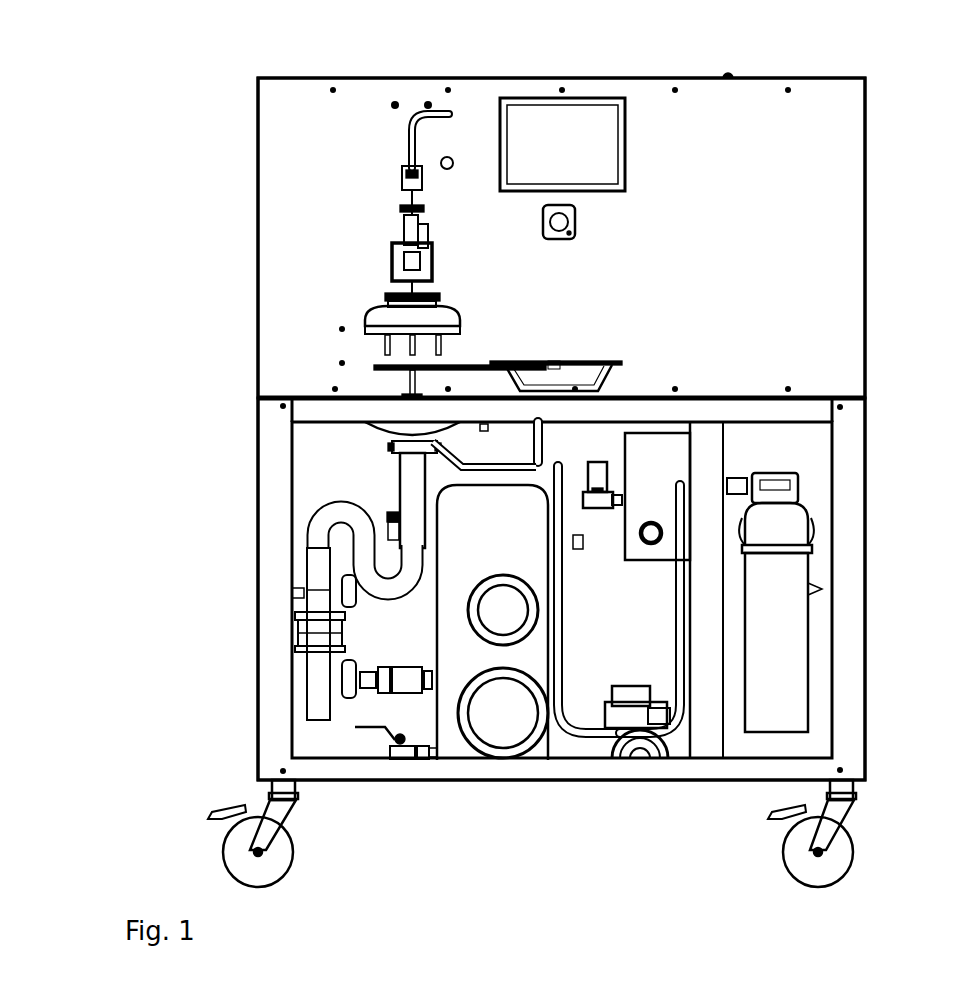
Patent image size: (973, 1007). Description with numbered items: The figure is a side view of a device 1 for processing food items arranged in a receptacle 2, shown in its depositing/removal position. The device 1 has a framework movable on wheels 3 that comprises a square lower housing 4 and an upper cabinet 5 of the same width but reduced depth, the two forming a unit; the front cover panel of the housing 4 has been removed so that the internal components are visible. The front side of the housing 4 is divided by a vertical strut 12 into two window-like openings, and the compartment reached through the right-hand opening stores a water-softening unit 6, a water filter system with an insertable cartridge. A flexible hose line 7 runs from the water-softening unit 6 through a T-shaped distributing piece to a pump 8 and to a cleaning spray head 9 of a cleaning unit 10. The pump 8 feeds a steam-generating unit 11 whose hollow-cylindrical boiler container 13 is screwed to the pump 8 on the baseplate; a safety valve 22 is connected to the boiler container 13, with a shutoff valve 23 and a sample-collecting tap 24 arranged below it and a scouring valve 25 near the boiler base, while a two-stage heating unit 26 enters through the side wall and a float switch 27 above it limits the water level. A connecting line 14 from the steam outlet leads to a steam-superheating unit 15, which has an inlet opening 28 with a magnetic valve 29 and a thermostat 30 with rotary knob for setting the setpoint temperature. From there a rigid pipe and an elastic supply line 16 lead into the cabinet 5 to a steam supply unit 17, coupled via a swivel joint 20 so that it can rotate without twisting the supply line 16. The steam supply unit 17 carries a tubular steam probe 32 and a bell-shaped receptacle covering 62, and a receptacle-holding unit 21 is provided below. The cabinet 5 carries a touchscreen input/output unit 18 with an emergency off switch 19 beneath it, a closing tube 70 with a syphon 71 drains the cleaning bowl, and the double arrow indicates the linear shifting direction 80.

The device 1 is at (196, 80).
The receptacle 2 is at (590, 377).
The wheels 3 is at (245, 852).
The lower housing 4 is at (262, 723).
The upper cabinet 5 is at (695, 95).
The water-softening unit 6 is at (796, 660).
The hose line 7 is at (677, 722).
The pump 8 is at (640, 757).
The cleaning spray head 9 is at (393, 449).
The cleaning unit 10 is at (366, 433).
The steam-generating unit 11 is at (452, 730).
The vertical strut 12 is at (718, 630).
The boiler container 13 is at (553, 745).
The connecting line 14 is at (550, 422).
The steam-superheating unit 15 is at (660, 452).
The supply line 16 is at (408, 148).
The steam supply unit 17 is at (378, 262).
The input/output unit 18 is at (556, 110).
The emergency off switch 19 is at (563, 223).
The swivel joint 20 is at (401, 178).
The receptacle-holding unit 21 is at (467, 363).
The safety valve 22 is at (350, 518).
The shutoff valve 23 is at (350, 600).
The sample-collecting tap 24 is at (397, 681).
The scouring valve 25 is at (402, 752).
The heating unit 26 is at (497, 735).
The float switch 27 is at (500, 622).
The inlet opening 28 is at (597, 508).
The magnetic valve 29 is at (600, 472).
The thermostat 30 is at (653, 533).
The steam probe 32 is at (380, 349).
The receptacle covering 62 is at (362, 318).
The closing tube 70 is at (408, 482).
The syphon 71 is at (350, 582).
The linear shifting direction 80 is at (466, 70).